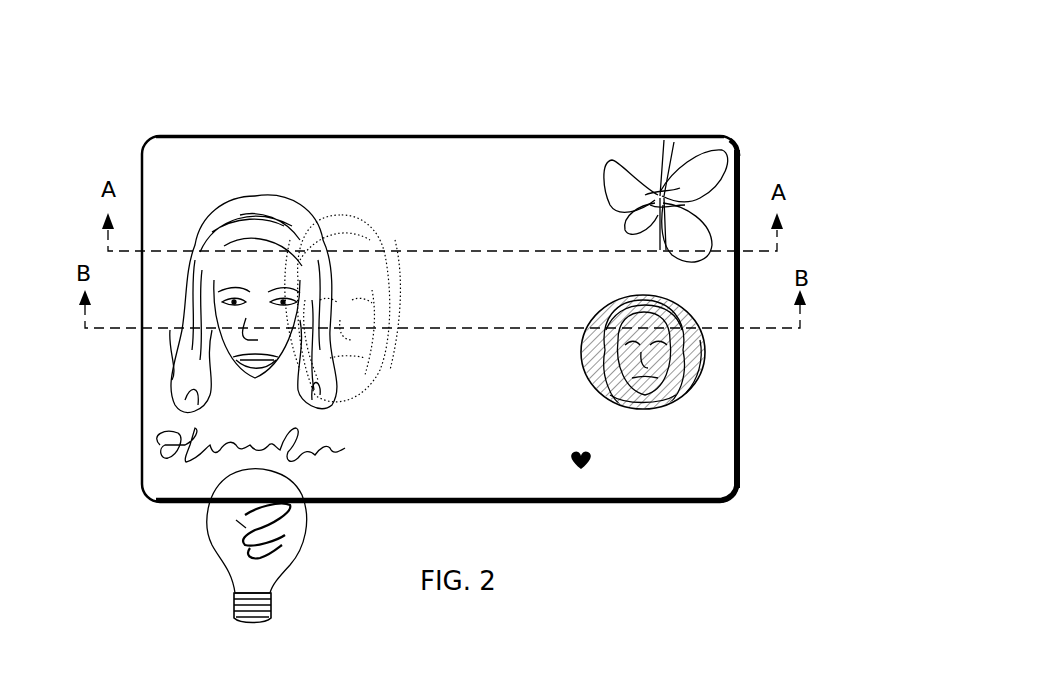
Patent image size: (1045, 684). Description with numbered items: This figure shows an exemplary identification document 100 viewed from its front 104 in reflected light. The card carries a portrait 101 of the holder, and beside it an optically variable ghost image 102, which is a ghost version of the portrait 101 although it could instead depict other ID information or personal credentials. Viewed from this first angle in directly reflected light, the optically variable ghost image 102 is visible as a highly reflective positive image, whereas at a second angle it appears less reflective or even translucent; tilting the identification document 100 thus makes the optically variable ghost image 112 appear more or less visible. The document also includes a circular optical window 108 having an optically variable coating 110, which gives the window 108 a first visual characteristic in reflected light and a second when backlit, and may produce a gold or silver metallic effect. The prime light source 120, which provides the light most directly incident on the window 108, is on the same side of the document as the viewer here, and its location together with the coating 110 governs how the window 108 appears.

The identification document 100 is at (128, 156).
The portrait 101 is at (160, 348).
The optically variable ghost image 102 is at (335, 214).
The front 104 is at (459, 420).
The optical window 108 is at (703, 383).
The coating 110 is at (702, 376).
The optically variable ghost image 112 is at (653, 390).
The prime light source 120 is at (203, 525).